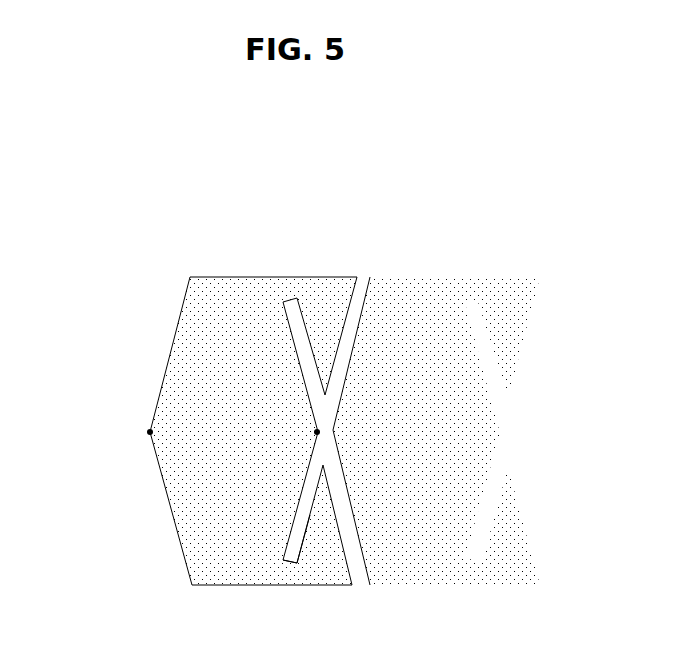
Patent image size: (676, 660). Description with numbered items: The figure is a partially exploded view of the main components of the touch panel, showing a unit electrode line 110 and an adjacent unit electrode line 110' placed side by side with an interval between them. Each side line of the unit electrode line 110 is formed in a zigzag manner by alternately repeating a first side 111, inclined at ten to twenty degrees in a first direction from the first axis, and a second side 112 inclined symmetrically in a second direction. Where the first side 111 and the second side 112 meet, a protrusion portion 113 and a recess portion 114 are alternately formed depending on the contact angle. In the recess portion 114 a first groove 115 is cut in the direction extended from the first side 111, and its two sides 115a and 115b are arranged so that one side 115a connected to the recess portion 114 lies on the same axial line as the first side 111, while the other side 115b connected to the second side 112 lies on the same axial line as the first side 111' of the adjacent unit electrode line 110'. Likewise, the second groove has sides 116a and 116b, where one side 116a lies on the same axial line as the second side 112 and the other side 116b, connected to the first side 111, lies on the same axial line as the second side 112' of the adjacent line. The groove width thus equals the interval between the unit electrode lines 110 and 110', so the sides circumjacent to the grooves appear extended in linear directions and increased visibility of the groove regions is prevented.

The unit electrode line 110 is at (253, 390).
The adjacent unit electrode line 110' is at (436, 390).
The first side 111 is at (207, 315).
The first side of adjacent unit electrode line 111' is at (369, 313).
The second side 112 is at (207, 541).
The second side of adjacent unit electrode line 112' is at (365, 540).
The protrusion portion 113 is at (150, 432).
The recess portion 114 is at (317, 432).
The first groove 115 is at (312, 483).
The one side of first groove 115a is at (302, 542).
The other side of first groove 115b is at (303, 542).
The one side of second groove 116a is at (287, 338).
The other side of second groove 116b is at (297, 299).